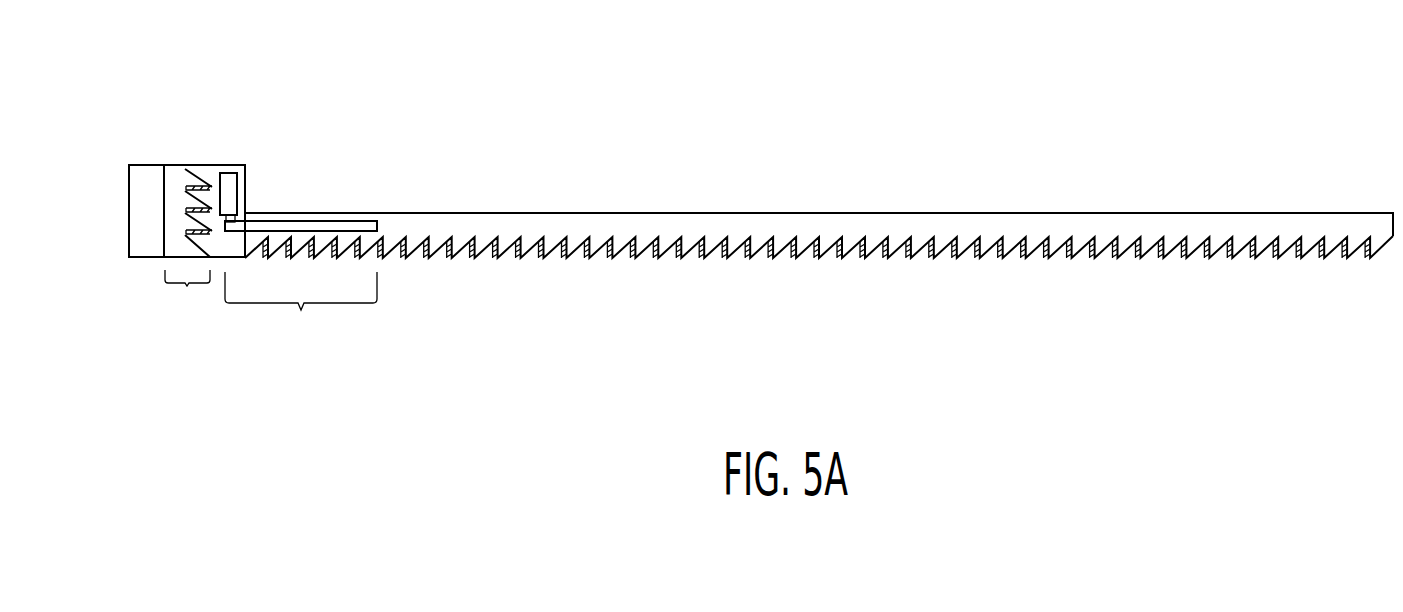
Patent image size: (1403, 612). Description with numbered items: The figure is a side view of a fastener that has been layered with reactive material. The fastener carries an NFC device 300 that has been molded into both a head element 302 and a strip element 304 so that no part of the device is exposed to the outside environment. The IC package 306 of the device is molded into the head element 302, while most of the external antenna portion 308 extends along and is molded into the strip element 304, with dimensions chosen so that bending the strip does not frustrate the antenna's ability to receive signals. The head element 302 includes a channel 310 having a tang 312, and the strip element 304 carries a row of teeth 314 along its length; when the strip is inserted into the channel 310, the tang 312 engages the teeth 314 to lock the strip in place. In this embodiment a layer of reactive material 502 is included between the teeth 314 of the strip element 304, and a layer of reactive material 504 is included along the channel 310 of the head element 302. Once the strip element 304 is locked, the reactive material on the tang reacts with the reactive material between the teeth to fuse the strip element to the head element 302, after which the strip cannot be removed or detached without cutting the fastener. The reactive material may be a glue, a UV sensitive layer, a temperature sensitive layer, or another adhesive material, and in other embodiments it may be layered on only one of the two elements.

The NFC device 300 is at (301, 309).
The head element 302 is at (128, 165).
The strip element 304 is at (845, 213).
The IC package 306 is at (237, 192).
The external antenna portion 308 is at (358, 222).
The channel 310 is at (187, 294).
The tang 312 is at (202, 173).
The teeth 314 is at (830, 257).
The layer of reactive material 502 is at (1335, 258).
The layer of reactive material 504 is at (192, 232).